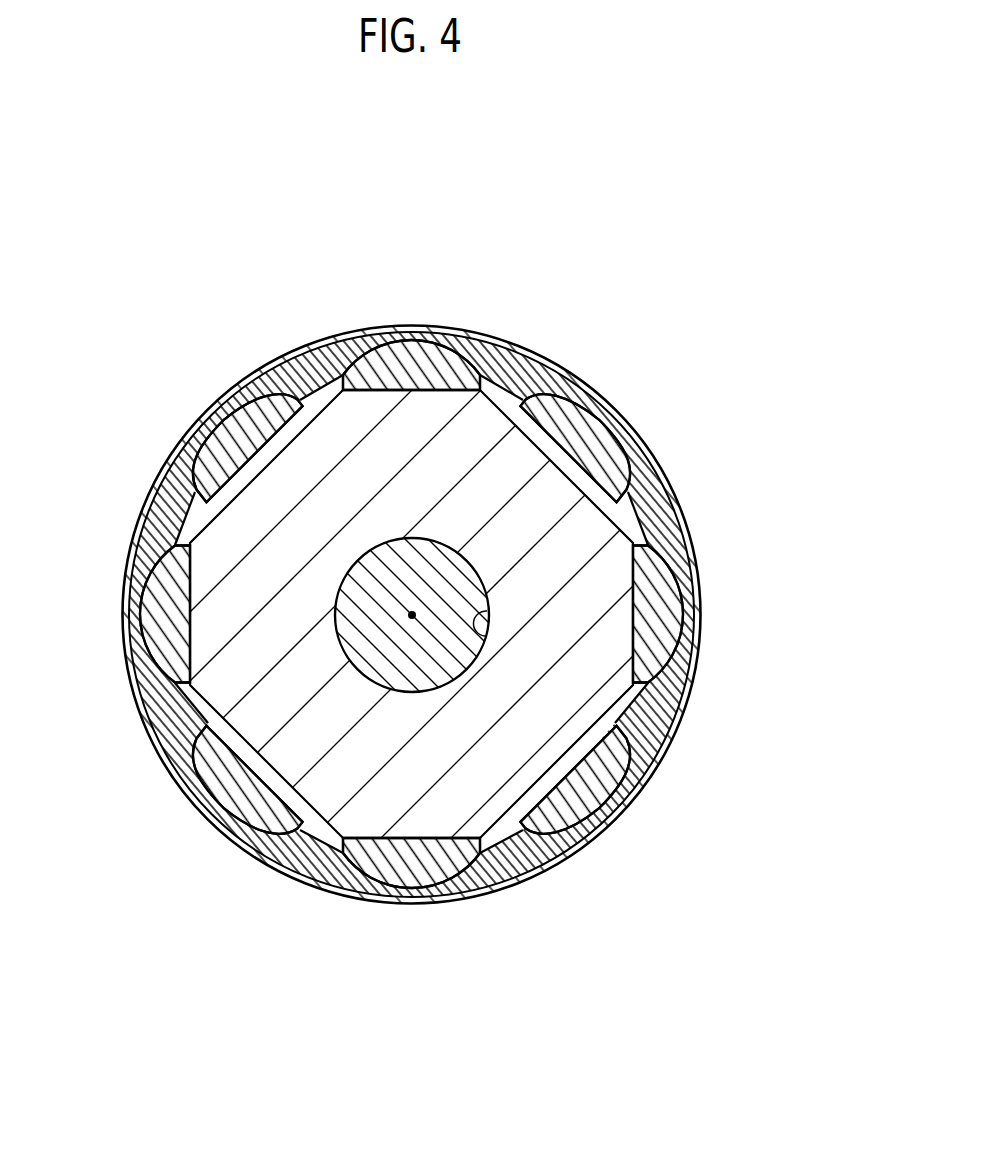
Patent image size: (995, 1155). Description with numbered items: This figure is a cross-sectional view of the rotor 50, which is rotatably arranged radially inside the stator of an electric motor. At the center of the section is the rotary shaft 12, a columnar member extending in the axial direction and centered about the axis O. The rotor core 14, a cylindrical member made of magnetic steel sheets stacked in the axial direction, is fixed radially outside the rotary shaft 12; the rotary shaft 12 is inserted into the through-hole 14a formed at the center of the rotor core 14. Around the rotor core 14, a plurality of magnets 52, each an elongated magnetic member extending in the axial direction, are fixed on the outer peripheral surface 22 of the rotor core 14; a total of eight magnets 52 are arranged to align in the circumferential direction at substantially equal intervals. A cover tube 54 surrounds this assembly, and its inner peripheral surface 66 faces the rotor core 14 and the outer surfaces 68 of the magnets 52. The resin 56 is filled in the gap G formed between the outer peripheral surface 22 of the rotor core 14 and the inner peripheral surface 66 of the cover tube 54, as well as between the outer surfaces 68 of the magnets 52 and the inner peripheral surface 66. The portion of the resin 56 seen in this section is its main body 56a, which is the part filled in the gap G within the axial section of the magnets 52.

The rotor 50 is at (735, 151).
The rotary shaft 12 is at (424, 548).
The rotor core 14 is at (612, 523).
The through-hole 14a is at (485, 636).
The outer peripheral surface 22 is at (150, 497).
The magnet 52 is at (420, 352).
The cover tube 54 is at (322, 338).
The resin 56 is at (495, 892).
The main body 56a is at (510, 375).
The inner peripheral surface 66 is at (541, 866).
The outer surface 68 is at (370, 340).
The gap G is at (296, 866).
The axis O is at (412, 615).